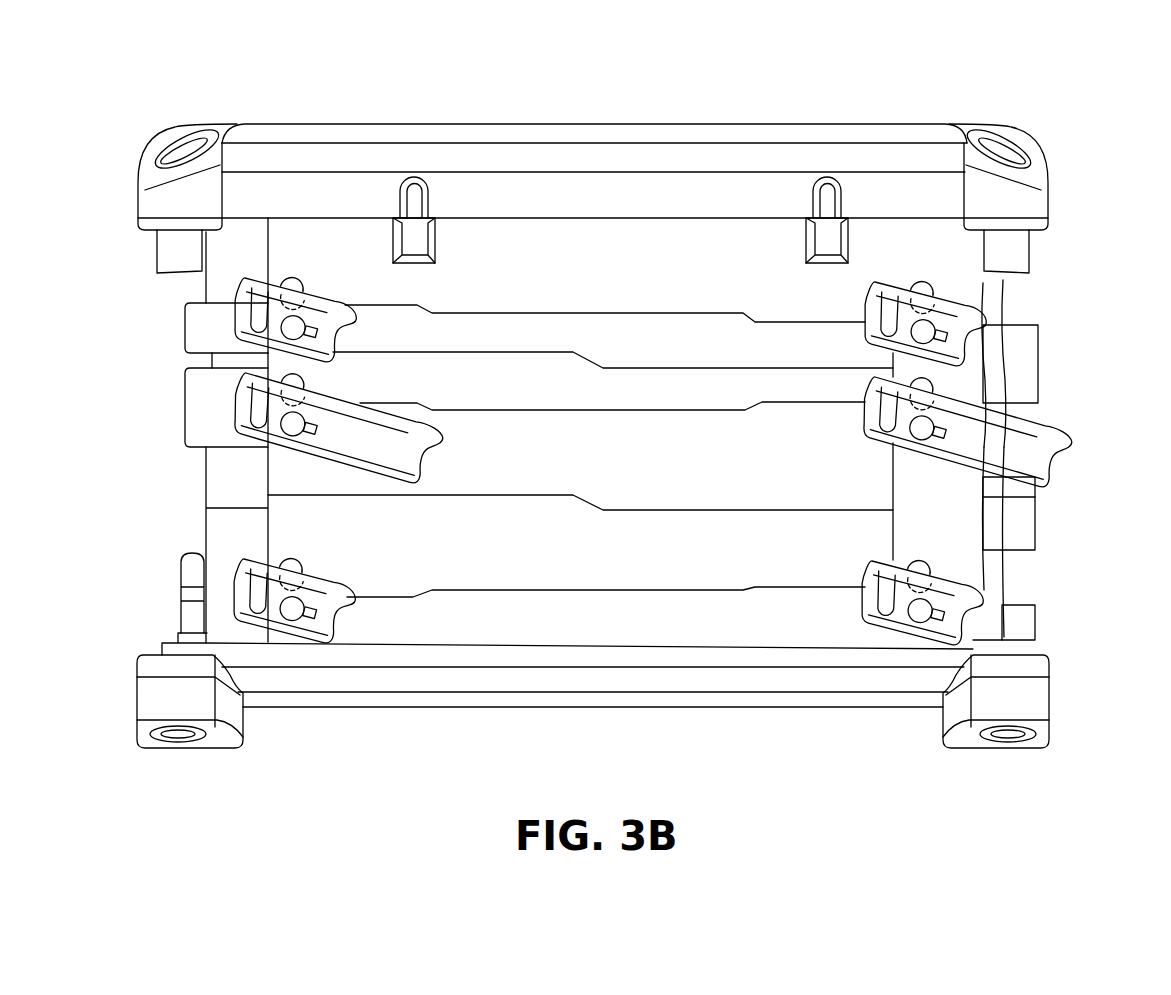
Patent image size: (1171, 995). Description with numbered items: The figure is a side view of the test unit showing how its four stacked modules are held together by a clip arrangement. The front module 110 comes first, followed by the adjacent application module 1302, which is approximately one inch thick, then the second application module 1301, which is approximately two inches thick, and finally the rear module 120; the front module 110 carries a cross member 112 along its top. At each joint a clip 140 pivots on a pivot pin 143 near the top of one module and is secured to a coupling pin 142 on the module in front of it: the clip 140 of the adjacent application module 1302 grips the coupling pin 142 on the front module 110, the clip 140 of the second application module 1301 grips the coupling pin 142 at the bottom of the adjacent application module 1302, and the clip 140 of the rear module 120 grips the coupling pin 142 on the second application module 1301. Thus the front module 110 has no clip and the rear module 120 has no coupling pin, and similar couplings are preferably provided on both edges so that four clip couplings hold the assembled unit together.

The front module 110 is at (1078, 122).
The upper cross bar 112 is at (585, 126).
The rear module 120 is at (1078, 592).
The second application module 1301 is at (1078, 403).
The adjacent application module 1302 is at (1078, 323).
The clip 140 is at (340, 325).
The coupling pin 142 is at (302, 283).
The pivot pin 143 is at (290, 327).